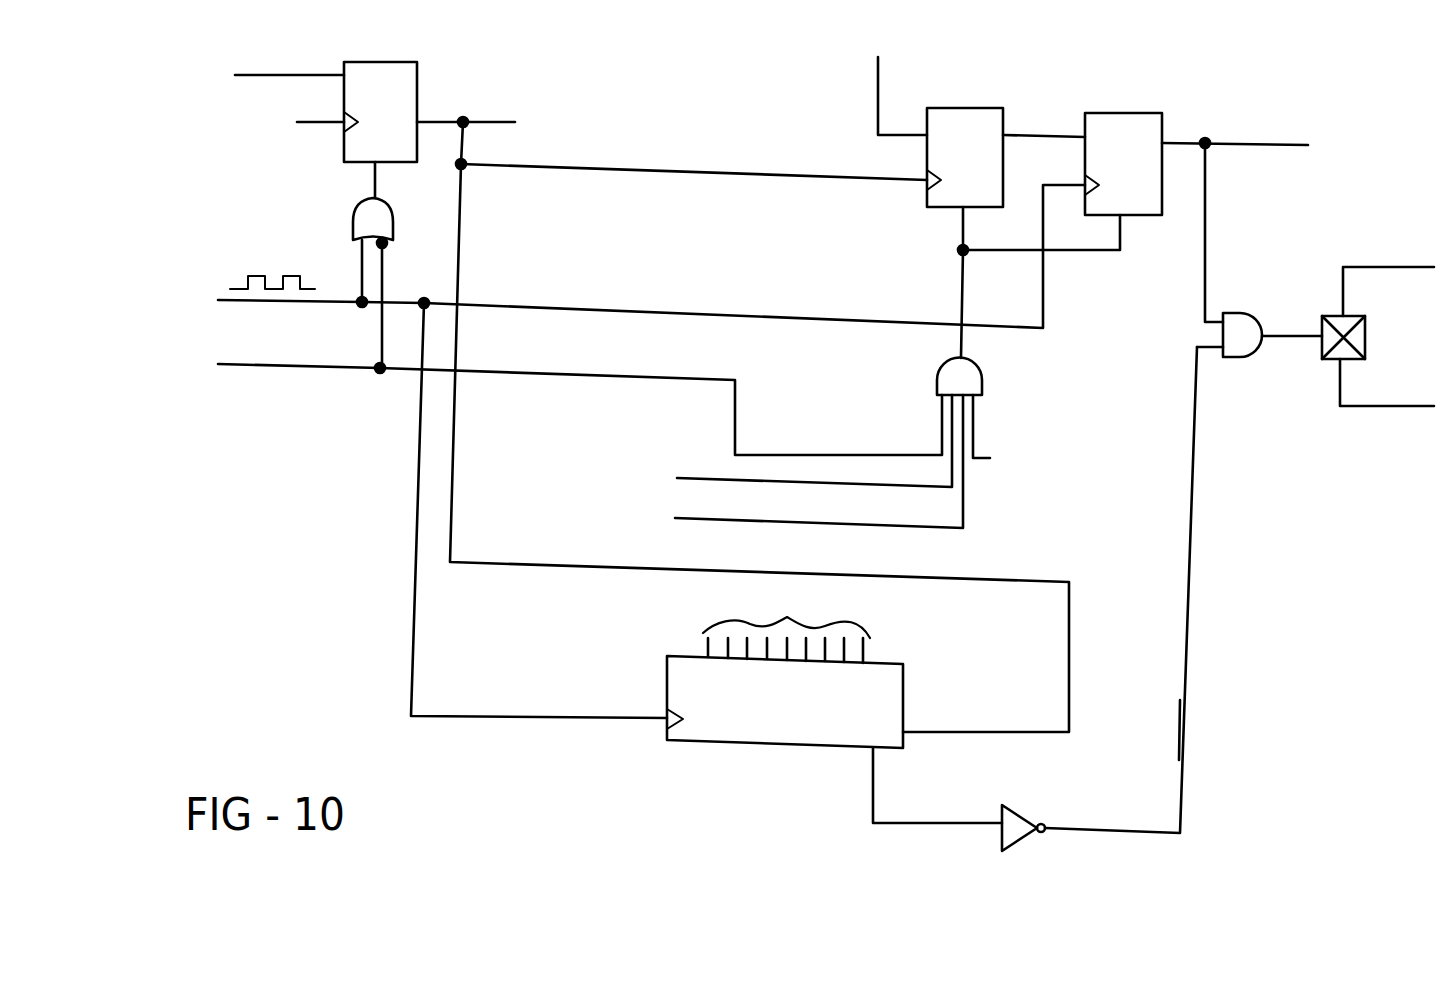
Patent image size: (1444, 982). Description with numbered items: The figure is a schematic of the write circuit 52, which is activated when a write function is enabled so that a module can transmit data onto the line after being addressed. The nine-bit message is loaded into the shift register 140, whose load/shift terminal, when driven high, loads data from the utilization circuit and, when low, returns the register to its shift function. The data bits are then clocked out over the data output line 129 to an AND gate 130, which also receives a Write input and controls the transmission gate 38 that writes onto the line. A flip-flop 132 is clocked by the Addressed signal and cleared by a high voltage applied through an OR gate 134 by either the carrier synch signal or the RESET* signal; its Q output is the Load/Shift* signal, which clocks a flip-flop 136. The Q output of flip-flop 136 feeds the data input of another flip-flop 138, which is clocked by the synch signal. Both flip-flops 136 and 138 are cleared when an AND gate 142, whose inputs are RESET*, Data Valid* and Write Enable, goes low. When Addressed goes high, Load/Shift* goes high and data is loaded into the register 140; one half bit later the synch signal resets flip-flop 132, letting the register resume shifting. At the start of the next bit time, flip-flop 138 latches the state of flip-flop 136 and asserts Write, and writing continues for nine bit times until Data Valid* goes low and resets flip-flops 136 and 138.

The write circuit 52 is at (290, 633).
The flip-flop 132 is at (390, 62).
The OR gate 134 is at (353, 220).
The flip-flop 136 is at (963, 108).
The flip-flop 138 is at (1125, 113).
The AND gate 130 is at (1235, 313).
The transmission gate 38 is at (1320, 348).
The AND gate 142 is at (937, 366).
The shift register 140 is at (667, 683).
The data output line 129 is at (1183, 714).